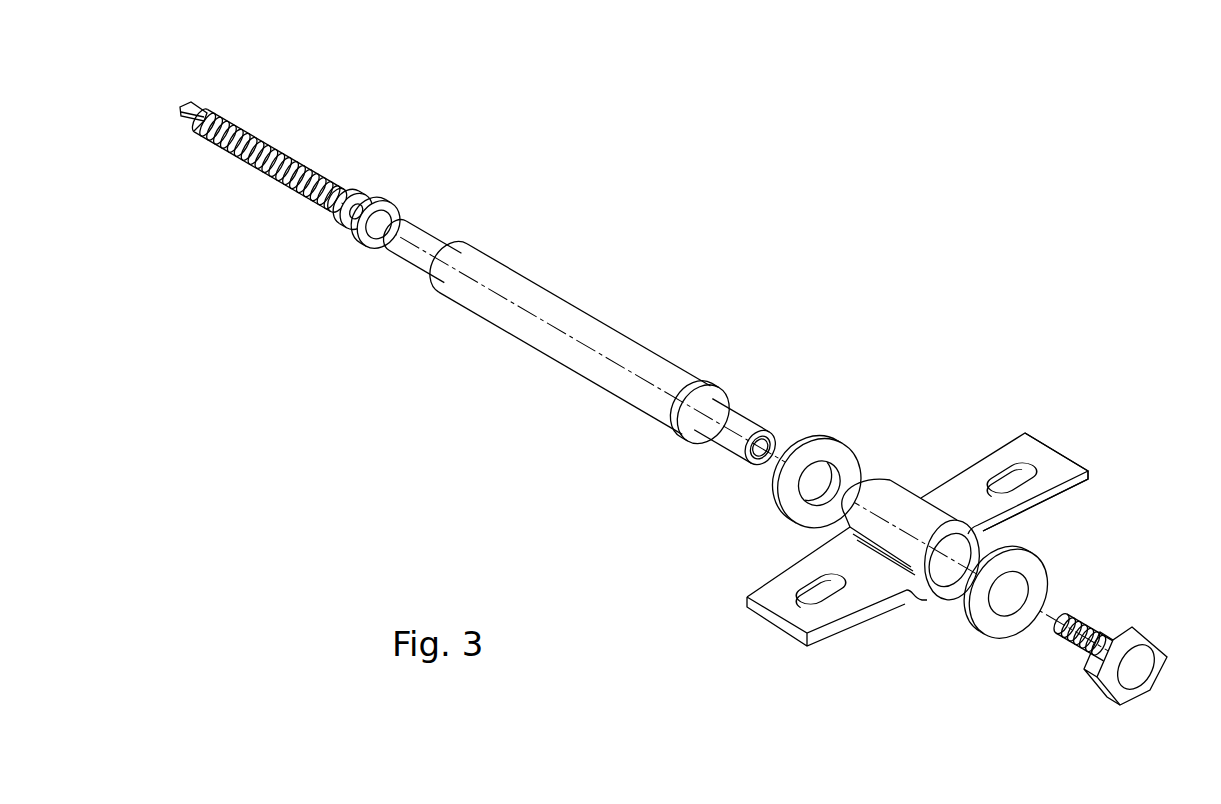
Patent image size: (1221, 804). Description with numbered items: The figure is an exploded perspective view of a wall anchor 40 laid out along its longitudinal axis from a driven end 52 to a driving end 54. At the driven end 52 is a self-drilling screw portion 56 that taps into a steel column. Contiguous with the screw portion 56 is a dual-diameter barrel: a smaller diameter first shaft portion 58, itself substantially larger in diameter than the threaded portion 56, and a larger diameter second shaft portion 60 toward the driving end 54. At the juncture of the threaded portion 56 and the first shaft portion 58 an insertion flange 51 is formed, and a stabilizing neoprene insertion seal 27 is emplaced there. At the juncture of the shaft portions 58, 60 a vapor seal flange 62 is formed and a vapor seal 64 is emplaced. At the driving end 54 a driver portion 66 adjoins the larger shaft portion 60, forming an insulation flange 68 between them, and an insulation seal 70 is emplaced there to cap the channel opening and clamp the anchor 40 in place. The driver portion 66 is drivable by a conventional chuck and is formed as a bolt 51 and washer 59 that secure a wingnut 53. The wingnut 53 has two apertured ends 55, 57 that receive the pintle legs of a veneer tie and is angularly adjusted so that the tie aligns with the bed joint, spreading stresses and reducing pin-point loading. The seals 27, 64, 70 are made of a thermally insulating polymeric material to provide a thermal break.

The wall anchor 40 is at (757, 618).
The driven end 52 is at (200, 105).
The self-drilling screw portion 56 is at (205, 108).
The insertion seal 27 is at (372, 197).
The vapor seal 64 is at (398, 206).
The insertion flange 51 is at (413, 237).
The first shaft portion 58 is at (428, 232).
The vapor seal flange 62 is at (458, 256).
The second shaft portion 60 is at (628, 336).
The insulation flange 68 is at (852, 442).
The insulation seal 70 is at (806, 440).
The aperture 55 is at (1012, 482).
The wingnut 53 is at (1073, 458).
The aperture 57 is at (833, 594).
The washer 59 is at (1038, 562).
The driving end 54 is at (1127, 708).
The driver portion 66 is at (1161, 693).